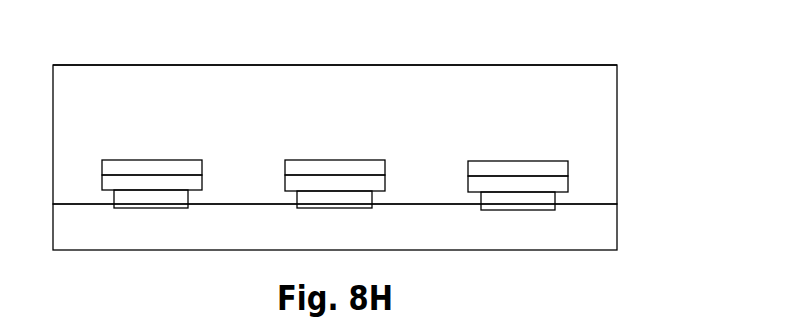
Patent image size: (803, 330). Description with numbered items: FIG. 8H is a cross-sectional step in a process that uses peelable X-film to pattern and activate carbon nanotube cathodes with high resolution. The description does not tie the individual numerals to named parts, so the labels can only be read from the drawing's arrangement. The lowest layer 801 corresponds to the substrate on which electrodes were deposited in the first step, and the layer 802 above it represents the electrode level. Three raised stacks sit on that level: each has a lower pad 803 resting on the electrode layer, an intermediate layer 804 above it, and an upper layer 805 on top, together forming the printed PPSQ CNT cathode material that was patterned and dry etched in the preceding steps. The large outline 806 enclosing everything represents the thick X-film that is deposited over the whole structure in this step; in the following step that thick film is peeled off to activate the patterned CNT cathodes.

The substrate 801 is at (617, 238).
The dielectric layer 802 is at (553, 212).
The pedestal / bond pad 803 is at (555, 196).
The die attach layer 804 is at (568, 182).
The die 805 is at (566, 161).
The encapsulant 806 is at (569, 62).